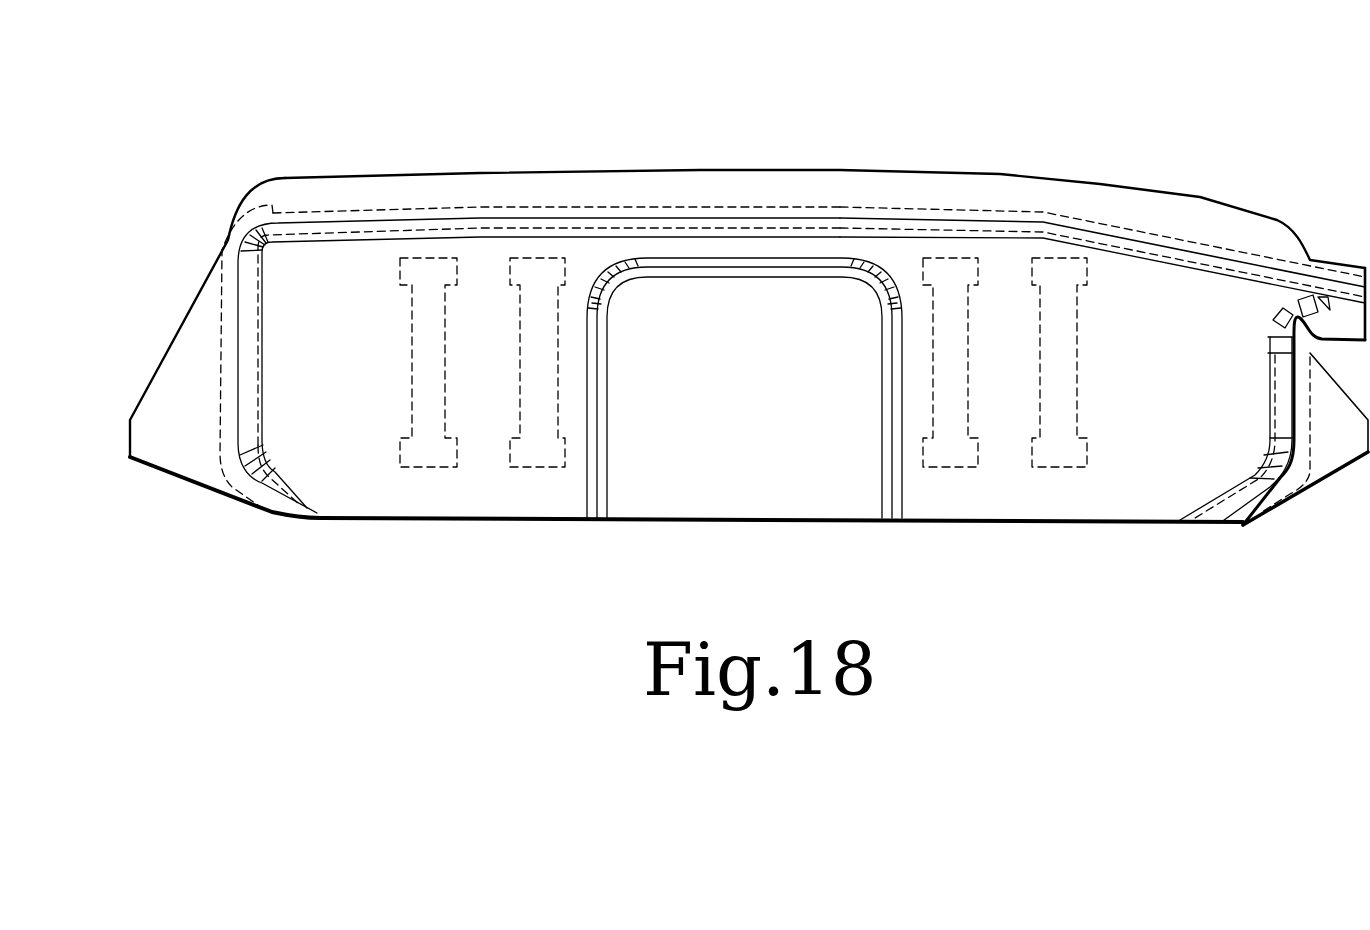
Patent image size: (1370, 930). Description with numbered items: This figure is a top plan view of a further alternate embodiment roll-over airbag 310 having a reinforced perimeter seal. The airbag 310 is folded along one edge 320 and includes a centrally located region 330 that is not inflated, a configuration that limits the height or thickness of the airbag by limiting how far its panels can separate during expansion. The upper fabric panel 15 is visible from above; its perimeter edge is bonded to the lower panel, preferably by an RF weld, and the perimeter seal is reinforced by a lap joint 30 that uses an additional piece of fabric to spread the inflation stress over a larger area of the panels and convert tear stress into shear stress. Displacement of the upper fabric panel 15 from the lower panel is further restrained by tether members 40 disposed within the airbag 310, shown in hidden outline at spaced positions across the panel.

The airbag 310 is at (749, 322).
The upper fabric panel 15 is at (1152, 288).
The lap joint 30 is at (430, 208).
The tether member 40 is at (445, 268).
The edge 320 is at (445, 523).
The region 330 is at (842, 492).